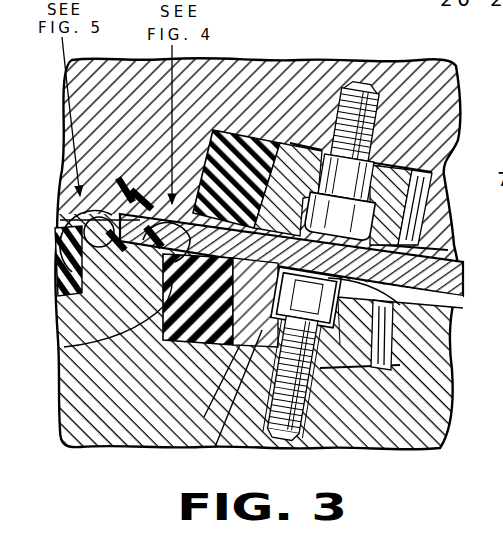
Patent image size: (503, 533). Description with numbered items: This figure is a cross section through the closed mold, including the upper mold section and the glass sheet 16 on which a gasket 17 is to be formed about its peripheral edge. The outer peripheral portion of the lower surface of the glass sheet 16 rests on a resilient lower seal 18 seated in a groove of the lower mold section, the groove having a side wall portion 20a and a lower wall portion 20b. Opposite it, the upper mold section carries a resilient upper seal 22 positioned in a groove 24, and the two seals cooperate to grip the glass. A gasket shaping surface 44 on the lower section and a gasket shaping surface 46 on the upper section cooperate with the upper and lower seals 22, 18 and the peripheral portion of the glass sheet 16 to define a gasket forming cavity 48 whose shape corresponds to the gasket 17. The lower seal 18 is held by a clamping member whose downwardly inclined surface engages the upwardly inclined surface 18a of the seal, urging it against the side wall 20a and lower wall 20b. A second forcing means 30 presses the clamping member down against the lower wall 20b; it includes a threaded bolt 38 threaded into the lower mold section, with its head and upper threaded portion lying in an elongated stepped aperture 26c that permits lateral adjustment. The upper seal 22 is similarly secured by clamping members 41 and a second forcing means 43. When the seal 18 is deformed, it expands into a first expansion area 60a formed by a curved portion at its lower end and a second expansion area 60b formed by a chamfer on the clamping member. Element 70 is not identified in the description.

The glass sheet 16 is at (463, 278).
The gasket 17 is at (131, 180).
The lower seal 18 is at (170, 340).
The upwardly inclined surface 18a is at (200, 341).
The side wall portion 20a is at (160, 288).
The lower wall portion 20b is at (216, 447).
The upper seal 22 is at (286, 146).
The groove 24 is at (224, 128).
The elongated stepped aperture 26c is at (447, 340).
The second forcing means 30 is at (334, 318).
The threaded bolt 38 is at (318, 442).
The clamping members 41 is at (415, 163).
The second forcing means 43 is at (382, 110).
The gasket shaping surface 44 is at (57, 270).
The gasket shaping surface 46 is at (124, 188).
The gasket forming cavity 48 is at (123, 220).
The first expansion area 60a is at (64, 347).
The second expansion area 60b is at (201, 388).
The gap 70 is at (502, 291).